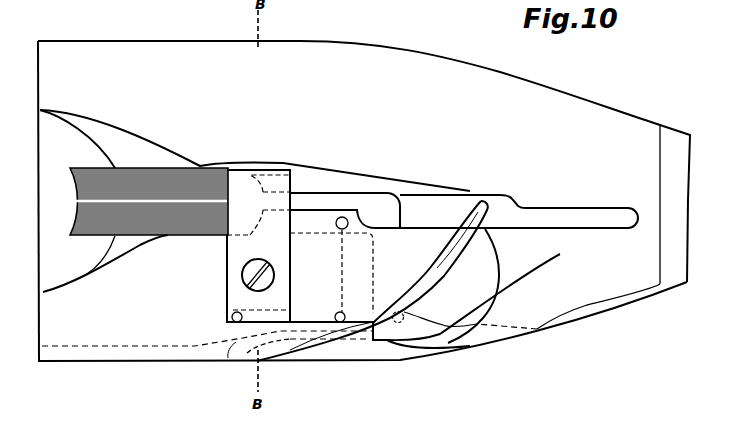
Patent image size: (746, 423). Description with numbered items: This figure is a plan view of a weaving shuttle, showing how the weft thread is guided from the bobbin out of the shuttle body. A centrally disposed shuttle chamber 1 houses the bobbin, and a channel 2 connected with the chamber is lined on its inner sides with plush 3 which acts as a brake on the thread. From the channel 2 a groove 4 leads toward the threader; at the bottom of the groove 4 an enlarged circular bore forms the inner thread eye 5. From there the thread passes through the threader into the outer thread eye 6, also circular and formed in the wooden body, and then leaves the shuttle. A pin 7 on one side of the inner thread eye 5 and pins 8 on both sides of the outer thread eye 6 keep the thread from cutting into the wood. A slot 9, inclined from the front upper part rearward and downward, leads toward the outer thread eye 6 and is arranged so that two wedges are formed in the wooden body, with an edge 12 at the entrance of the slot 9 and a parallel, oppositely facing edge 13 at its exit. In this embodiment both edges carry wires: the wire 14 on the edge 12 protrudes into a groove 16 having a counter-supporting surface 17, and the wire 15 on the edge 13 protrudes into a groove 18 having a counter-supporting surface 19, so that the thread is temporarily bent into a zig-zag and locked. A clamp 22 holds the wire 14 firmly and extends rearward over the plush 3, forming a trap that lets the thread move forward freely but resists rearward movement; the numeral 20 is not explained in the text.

The shuttle chamber 1 is at (50, 130).
The channel 2 is at (153, 236).
The plush 3 is at (193, 178).
The groove 4 is at (325, 202).
The inner thread eye 5 is at (307, 177).
The outer thread eye 6 is at (342, 273).
The pin 7 is at (345, 219).
The pins 8 is at (395, 313).
The slot 9 is at (455, 296).
The edge 12 is at (472, 222).
The edge 13 is at (373, 253).
The wire 14 is at (438, 268).
The wire 15 is at (353, 342).
The groove 16 is at (500, 198).
The counter-supporting surface 17 is at (518, 204).
The groove 18 is at (247, 353).
The counter-supporting surface 19 is at (230, 352).
The shoulder 20 is at (468, 195).
The clamp 22 is at (233, 255).